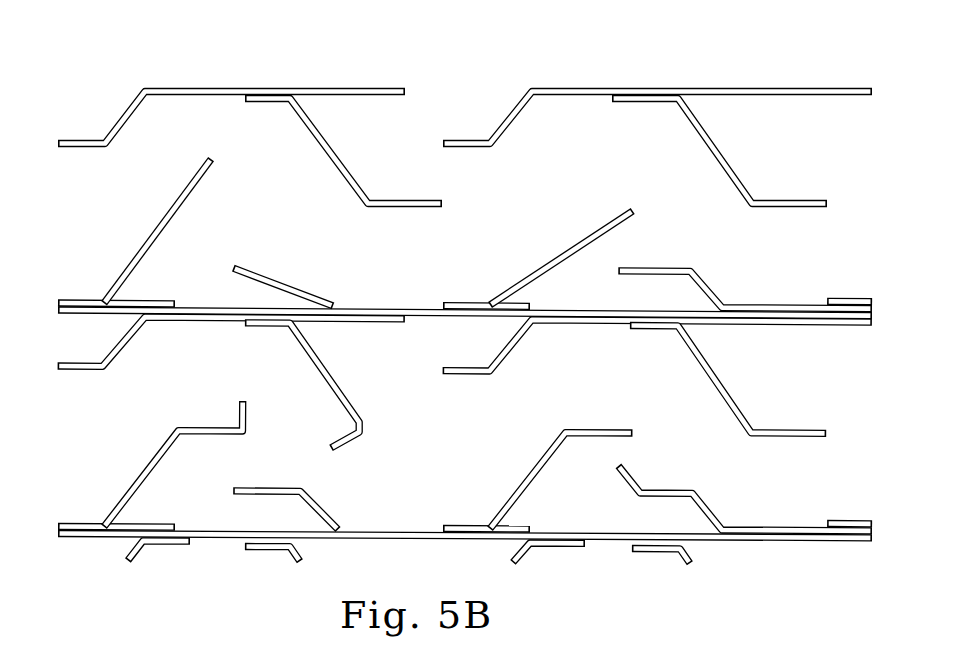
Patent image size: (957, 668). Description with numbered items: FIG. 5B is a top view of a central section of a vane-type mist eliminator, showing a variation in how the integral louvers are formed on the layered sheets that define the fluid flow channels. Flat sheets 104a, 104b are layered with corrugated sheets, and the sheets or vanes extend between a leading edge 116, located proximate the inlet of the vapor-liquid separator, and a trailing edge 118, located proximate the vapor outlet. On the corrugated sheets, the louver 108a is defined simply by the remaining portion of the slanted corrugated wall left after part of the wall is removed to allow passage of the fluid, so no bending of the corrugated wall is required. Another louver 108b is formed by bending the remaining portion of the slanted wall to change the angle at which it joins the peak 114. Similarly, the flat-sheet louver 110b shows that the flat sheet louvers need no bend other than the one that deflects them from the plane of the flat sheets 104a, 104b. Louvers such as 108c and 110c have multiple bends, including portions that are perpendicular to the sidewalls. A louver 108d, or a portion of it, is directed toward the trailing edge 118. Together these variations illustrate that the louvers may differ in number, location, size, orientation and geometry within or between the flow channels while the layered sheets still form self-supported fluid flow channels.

The flat sheet 104a is at (718, 88).
The flat sheet 104b is at (752, 305).
The louver 108a is at (152, 228).
The louver 108b is at (633, 218).
The louver 108c is at (157, 447).
The louver 108d is at (353, 441).
The flat sheet louver 110b is at (252, 268).
The flat sheet louver 110c is at (673, 488).
The peak 114 is at (463, 298).
The leading edge 116 is at (872, 314).
The trailing edge 118 is at (58, 310).